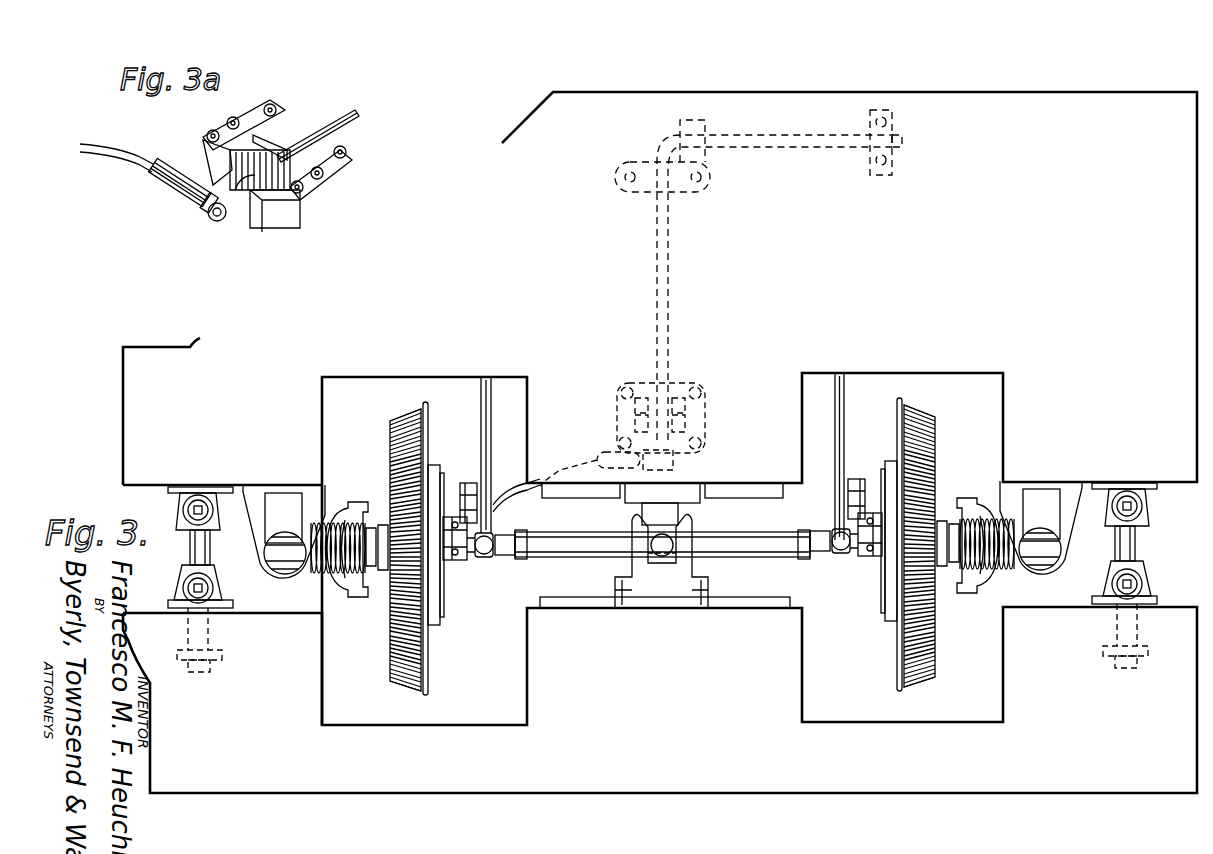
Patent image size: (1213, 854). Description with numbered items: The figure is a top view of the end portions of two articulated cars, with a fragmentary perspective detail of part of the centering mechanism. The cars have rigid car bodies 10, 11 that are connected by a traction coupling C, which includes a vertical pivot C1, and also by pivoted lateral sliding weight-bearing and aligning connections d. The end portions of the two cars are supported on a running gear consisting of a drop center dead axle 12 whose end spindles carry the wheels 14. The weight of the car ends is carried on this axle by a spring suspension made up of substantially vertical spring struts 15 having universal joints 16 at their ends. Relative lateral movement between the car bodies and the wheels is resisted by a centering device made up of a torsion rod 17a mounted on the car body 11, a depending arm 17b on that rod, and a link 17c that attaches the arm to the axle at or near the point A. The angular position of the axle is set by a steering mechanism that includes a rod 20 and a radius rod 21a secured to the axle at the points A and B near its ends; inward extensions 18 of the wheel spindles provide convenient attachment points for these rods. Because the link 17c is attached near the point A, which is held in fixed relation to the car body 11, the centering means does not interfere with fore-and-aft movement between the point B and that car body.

In FIG. 3, the car body 10 is at (140, 617).
In FIG. 3, the car body 11 is at (133, 375).
In FIG. 3, the drop center dead axle 12 is at (762, 550).
In FIG. 3, the wheels 14 is at (395, 438).
In FIG. 3, the spring struts 15 is at (320, 567).
In FIG. 3, the universal joints 16 is at (358, 507).
In FIG. 3A, the torsion rod 17a is at (338, 121).
In FIG. 3, the torsion rod 17a is at (672, 330).
In FIG. 3A, the depending arm 17b is at (268, 218).
In FIG. 3, the depending arm 17b is at (684, 457).
In FIG. 3A, the link 17c is at (138, 179).
In FIG. 3, the link 17c is at (523, 500).
In FIG. 3, the inward extensions 18 is at (447, 563).
In FIG. 3, the rod 20 is at (487, 457).
In FIG. 3, the radius rod 21a is at (843, 470).
In FIG. 3, the point A is at (493, 558).
In FIG. 3, the point B is at (843, 561).
In FIG. 3, the traction coupling C is at (663, 513).
In FIG. 3, the vertical pivot C1 is at (662, 557).
In FIG. 3, the pivoted lateral sliding weight-bearing and aligning connections d is at (179, 552).